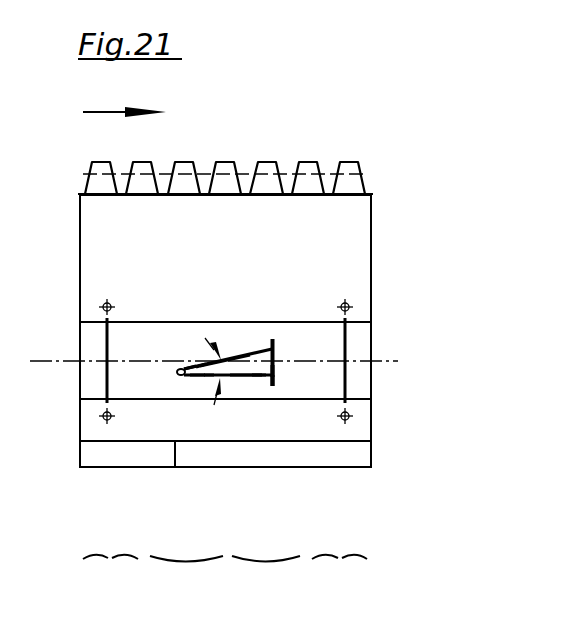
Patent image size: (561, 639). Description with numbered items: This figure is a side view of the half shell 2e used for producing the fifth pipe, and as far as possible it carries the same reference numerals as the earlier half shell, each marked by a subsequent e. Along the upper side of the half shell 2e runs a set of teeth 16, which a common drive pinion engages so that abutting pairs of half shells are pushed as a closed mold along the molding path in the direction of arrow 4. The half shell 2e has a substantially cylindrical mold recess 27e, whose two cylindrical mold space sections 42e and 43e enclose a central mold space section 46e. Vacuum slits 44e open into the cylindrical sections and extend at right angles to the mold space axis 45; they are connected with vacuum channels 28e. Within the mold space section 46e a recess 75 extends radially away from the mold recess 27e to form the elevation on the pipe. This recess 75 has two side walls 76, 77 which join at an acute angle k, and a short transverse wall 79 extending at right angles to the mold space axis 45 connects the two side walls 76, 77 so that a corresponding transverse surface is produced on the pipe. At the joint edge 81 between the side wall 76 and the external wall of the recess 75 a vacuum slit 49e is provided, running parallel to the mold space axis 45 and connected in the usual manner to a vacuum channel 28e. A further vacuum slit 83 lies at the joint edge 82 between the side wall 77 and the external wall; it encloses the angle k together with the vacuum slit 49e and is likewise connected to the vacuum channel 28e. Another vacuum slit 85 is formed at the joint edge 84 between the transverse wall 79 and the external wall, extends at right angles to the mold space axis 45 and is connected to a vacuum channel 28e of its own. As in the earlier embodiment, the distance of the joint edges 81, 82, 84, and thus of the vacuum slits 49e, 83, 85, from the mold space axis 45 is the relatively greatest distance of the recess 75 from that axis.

The production direction arrow 4 is at (124, 95).
The half shell 2e is at (231, 279).
The set of teeth 16 is at (221, 172).
The mold space section 42e is at (225, 464).
The mold space section 46e is at (225, 503).
The mold space section 43e is at (227, 524).
The vacuum channel 28e is at (101, 304).
The vacuum slit 44e is at (105, 344).
The mold recess 27e is at (358, 342).
The mold space axis 45 is at (377, 358).
The recess 75 is at (257, 364).
The side wall 77 is at (246, 354).
The transverse wall 79 is at (278, 354).
The joint edge 82 is at (193, 366).
The vacuum slit 83 is at (200, 362).
The side wall 76 is at (247, 377).
The joint edge 81 is at (200, 377).
The vacuum slit 49e is at (208, 378).
The vacuum slit 85 is at (275, 382).
The joint edge 84 is at (276, 377).
The acute angle k is at (221, 365).